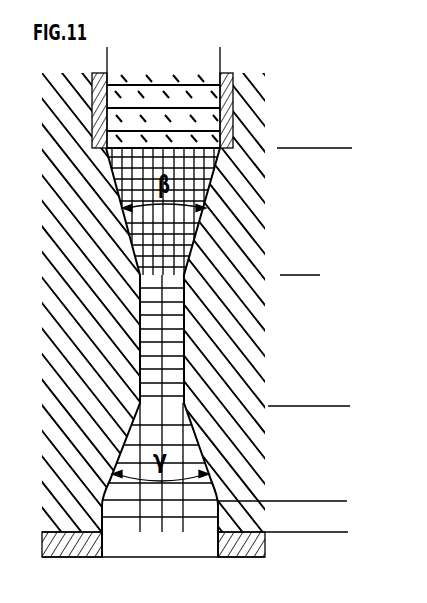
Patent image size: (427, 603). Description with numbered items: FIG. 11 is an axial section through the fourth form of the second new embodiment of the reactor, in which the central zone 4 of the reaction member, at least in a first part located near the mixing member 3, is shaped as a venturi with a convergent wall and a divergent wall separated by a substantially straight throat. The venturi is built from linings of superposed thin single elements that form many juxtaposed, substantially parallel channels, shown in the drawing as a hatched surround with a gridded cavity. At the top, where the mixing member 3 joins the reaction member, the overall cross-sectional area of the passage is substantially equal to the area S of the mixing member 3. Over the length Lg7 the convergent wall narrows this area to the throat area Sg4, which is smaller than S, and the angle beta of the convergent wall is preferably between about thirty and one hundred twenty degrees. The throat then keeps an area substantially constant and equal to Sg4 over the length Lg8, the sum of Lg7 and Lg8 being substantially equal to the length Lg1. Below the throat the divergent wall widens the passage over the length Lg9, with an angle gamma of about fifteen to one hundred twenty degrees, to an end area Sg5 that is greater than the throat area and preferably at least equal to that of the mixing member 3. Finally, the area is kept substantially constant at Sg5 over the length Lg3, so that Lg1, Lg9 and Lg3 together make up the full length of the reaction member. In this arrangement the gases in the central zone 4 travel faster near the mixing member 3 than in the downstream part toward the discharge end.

The mixing member 3 is at (226, 72).
The central zone of the reaction member 4 is at (209, 225).
The area of the mixing member S is at (220, 55).
The throat cross-sectional area Sg4 is at (126, 353).
The divergent-end cross-sectional area Sg5 is at (219, 592).
The length Lg1 is at (342, 148).
The convergent wall length Lg7 is at (293, 148).
The throat length Lg8 is at (293, 275).
The divergent wall length Lg9 is at (342, 406).
The constant-area outlet length Lg3 is at (342, 502).